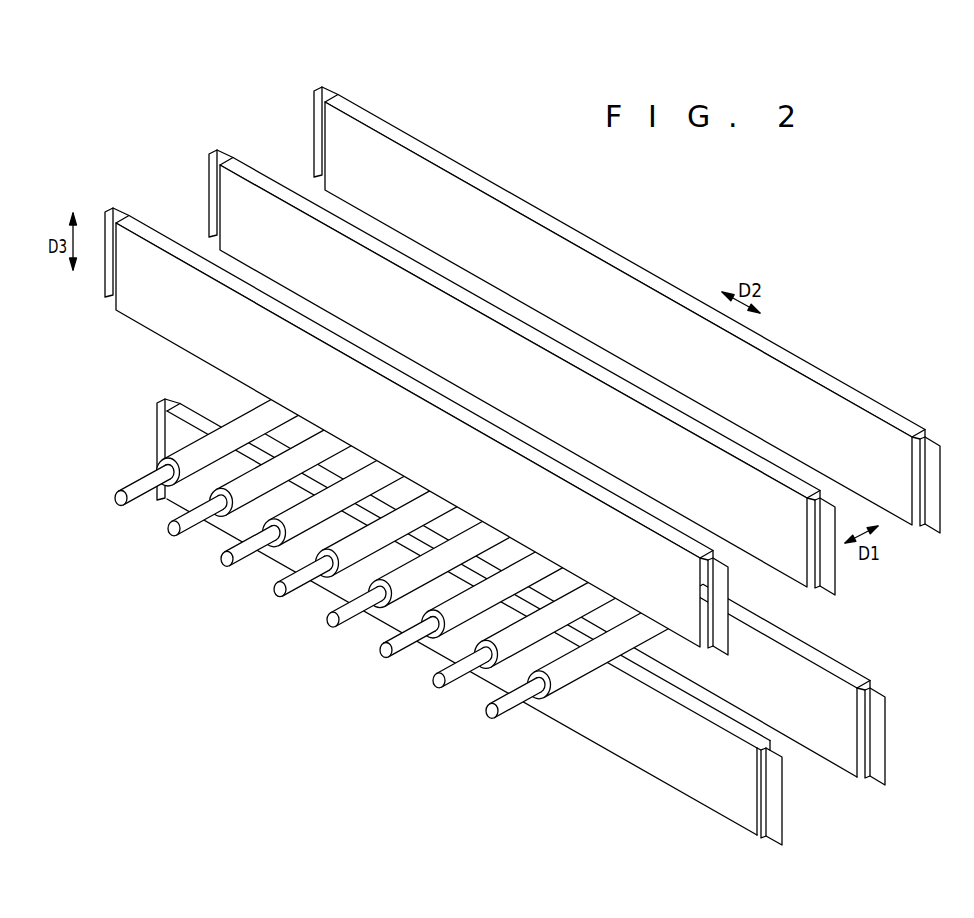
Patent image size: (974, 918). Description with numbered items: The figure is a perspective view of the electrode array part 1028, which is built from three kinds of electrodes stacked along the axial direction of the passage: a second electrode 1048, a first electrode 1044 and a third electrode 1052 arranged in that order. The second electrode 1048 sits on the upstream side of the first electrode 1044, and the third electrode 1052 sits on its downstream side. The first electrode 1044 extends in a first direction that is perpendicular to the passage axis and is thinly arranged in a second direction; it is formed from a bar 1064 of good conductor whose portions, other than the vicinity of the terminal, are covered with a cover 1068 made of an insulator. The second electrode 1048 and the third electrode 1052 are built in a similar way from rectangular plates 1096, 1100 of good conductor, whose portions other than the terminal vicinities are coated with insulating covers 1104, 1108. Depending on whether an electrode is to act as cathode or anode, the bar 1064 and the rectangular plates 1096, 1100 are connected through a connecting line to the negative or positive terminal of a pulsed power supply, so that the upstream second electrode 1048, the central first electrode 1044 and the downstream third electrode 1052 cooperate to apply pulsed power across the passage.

The electrode array part 1028 is at (527, 458).
The first electrode 1044 is at (390, 593).
The second electrode 1048 is at (522, 347).
The third electrode 1052 is at (538, 637).
The bar 1064 is at (374, 607).
The cover 1068 is at (374, 619).
The rectangular plate 1096 is at (825, 578).
The rectangular plate 1100 is at (872, 770).
The cover 1104 is at (792, 568).
The cover 1108 is at (853, 677).